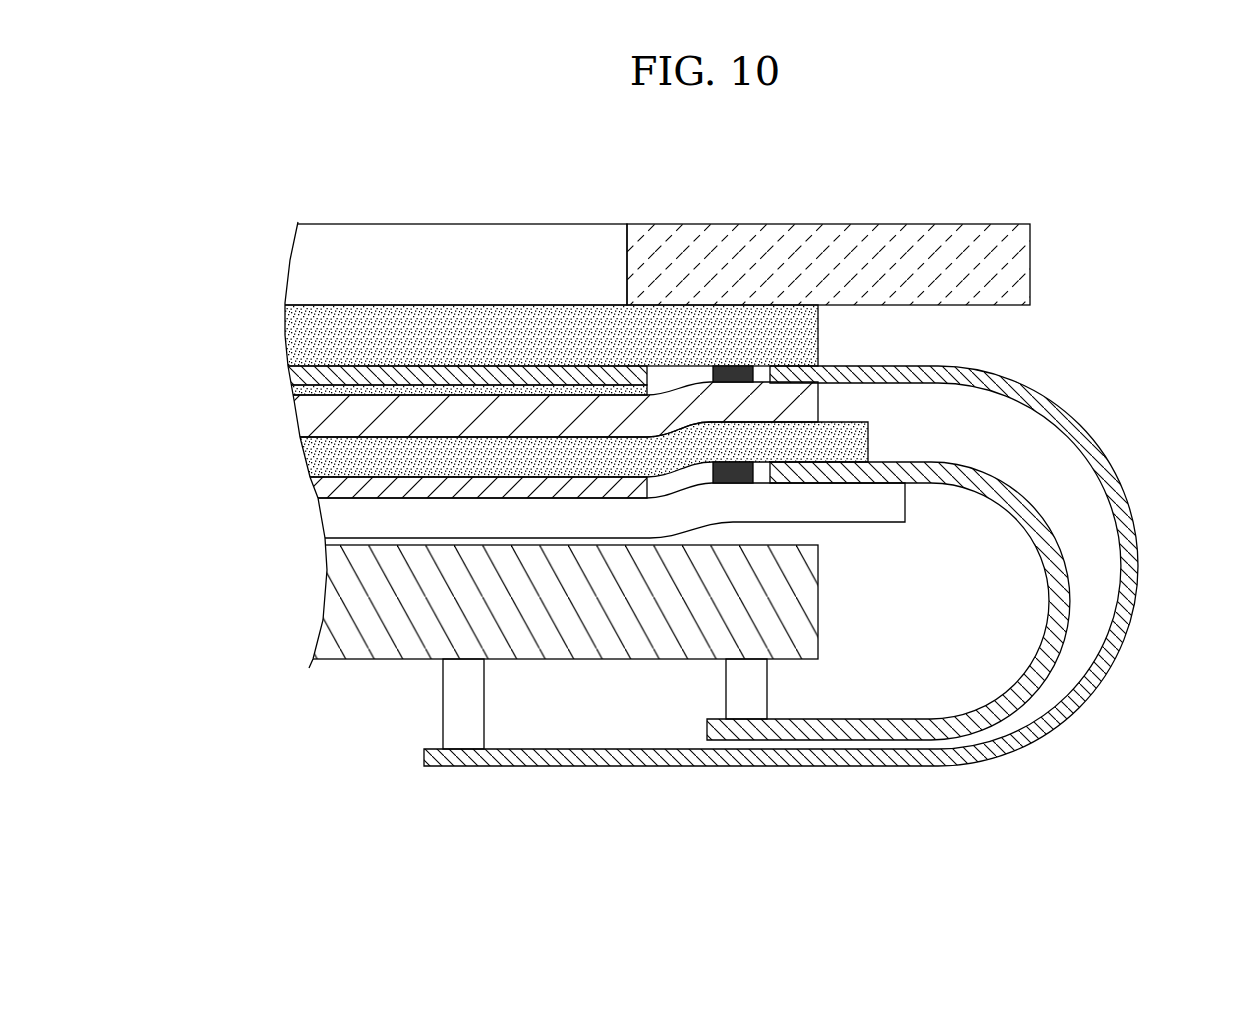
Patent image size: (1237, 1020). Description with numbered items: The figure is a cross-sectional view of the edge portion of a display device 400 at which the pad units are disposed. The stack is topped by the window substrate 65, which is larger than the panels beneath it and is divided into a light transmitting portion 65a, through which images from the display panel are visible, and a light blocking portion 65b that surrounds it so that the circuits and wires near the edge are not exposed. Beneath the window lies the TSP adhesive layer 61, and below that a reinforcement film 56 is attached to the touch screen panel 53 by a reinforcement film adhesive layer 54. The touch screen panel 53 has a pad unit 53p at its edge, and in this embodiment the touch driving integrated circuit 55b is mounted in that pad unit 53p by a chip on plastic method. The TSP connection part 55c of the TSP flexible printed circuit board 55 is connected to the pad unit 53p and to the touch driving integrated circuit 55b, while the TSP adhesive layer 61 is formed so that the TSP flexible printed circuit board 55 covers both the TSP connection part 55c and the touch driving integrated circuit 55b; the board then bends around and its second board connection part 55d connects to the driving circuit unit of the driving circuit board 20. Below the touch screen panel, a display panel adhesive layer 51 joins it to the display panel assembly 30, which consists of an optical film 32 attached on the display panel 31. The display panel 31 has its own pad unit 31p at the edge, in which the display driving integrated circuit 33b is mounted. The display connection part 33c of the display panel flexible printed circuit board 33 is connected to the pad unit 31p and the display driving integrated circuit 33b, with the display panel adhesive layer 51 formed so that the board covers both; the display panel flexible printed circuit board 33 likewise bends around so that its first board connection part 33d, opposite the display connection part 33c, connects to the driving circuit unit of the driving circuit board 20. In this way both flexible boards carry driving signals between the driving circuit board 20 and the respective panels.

The display device 400 is at (820, 182).
The window substrate 65 is at (663, 184).
The light transmitting portion 65a is at (583, 252).
The light blocking portion 65b is at (668, 253).
The TSP adhesive layer 61 is at (307, 327).
The reinforcement film 56 is at (310, 373).
The reinforcement film adhesive layer 54 is at (292, 388).
The touch screen panel 53 is at (318, 412).
The display panel adhesive layer 51 is at (327, 455).
The display panel assembly 30 is at (268, 480).
The optical film 32 is at (338, 486).
The display panel 31 is at (340, 518).
The driving circuit board 20 is at (348, 596).
The pad unit 31p is at (970, 482).
The display panel flexible printed circuit board 33 is at (1063, 602).
The display driving integrated circuit 33b is at (735, 483).
The display connection part 33c is at (862, 440).
The first board connection part 33d is at (817, 733).
The pad unit 53p is at (988, 387).
The TSP flexible printed circuit board 55 is at (1124, 580).
The touch driving integrated circuit 55b is at (733, 365).
The TSP connection part 55c is at (790, 364).
The second board connection part 55d is at (433, 758).